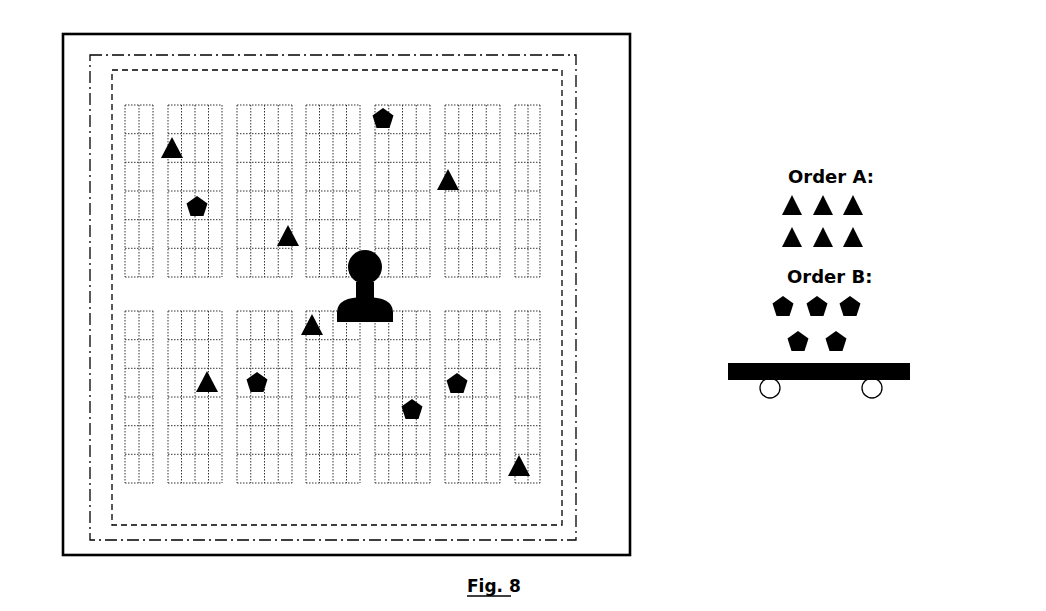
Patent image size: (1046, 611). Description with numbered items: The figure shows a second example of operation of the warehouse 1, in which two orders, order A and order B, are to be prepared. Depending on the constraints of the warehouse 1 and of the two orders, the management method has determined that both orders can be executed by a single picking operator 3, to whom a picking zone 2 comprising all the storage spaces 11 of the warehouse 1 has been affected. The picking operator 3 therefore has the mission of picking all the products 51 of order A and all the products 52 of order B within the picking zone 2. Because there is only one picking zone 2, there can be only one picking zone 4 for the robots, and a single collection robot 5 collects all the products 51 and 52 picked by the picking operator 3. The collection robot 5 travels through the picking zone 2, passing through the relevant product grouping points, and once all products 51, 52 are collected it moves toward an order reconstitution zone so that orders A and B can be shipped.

The warehouse 1 is at (630, 60).
The picking zone 2 is at (562, 283).
The picking operator 3 is at (352, 288).
The picking zone for the robots 4 is at (576, 222).
The collection robot 5 is at (745, 363).
The storage spaces 11 is at (308, 133).
The products of the order A 51 is at (160, 151).
The products of the order B 52 is at (184, 206).